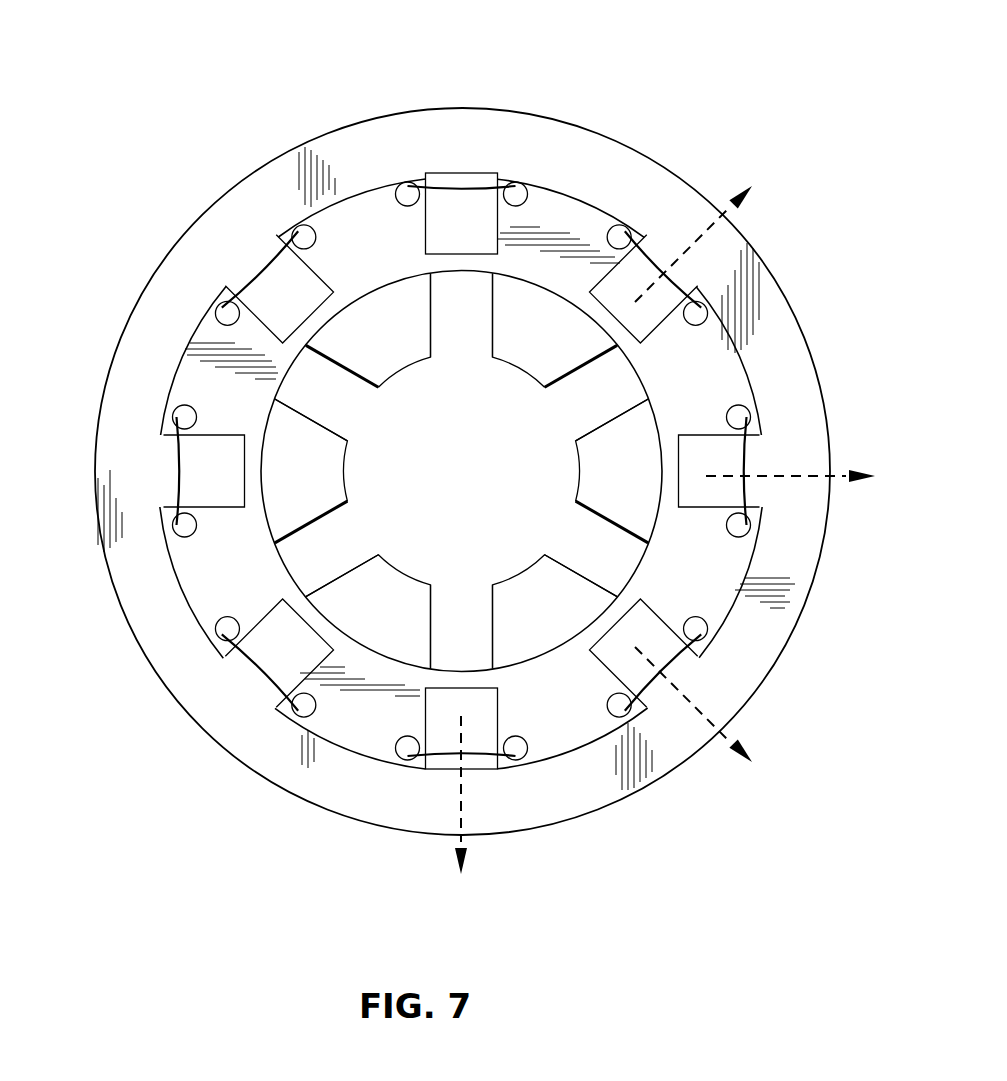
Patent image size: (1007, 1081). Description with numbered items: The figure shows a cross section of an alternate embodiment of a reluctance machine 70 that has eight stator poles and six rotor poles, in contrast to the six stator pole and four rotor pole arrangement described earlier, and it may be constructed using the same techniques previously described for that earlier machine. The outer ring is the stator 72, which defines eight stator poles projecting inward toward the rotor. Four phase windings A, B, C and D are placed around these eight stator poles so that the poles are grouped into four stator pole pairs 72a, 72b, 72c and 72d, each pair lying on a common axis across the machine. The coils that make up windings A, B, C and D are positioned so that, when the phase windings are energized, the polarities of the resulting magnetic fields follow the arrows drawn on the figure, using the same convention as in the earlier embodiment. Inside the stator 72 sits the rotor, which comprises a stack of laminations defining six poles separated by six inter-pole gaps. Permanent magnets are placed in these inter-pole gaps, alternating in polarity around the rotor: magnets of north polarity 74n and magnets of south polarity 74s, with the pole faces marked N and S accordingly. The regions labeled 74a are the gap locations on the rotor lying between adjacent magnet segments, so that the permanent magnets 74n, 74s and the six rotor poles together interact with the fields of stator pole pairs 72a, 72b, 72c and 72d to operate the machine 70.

The reluctance machine 70 is at (238, 128).
The stator 72 is at (178, 240).
The stator pole pair 72a is at (642, 272).
The stator pole pair 72b is at (192, 452).
The stator pole pair 72c is at (273, 265).
The stator pole pair 72d is at (443, 218).
The rotor gap segment between magnets 74a is at (471, 300).
The permanent magnet of north polarity 74n is at (520, 297).
The permanent magnet of south polarity 74s is at (392, 297).